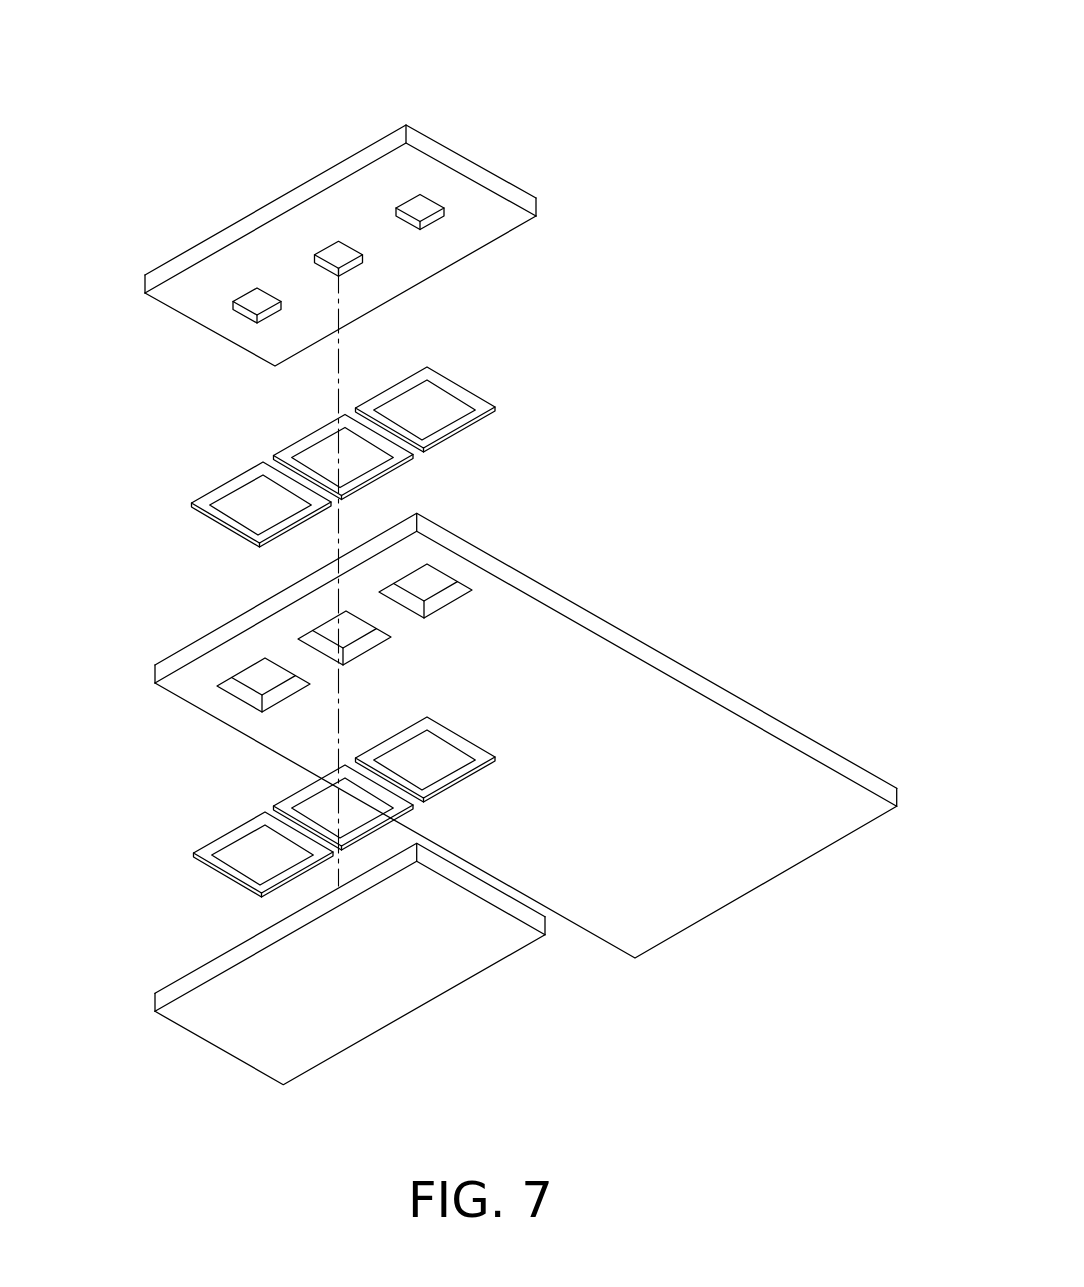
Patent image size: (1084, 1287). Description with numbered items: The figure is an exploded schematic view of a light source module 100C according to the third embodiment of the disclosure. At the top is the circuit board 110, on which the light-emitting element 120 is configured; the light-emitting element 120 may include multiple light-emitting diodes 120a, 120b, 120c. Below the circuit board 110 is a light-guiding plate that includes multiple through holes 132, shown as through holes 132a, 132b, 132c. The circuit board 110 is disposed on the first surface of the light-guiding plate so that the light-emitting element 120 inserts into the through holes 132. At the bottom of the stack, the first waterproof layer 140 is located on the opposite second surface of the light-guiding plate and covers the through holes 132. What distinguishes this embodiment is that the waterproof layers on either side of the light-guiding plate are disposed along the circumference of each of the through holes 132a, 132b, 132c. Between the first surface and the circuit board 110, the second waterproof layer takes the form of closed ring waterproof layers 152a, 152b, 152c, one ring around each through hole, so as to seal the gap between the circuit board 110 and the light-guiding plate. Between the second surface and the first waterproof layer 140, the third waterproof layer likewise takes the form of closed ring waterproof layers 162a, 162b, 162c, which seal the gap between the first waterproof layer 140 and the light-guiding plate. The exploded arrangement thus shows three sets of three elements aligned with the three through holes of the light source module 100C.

The circuit board 110 is at (469, 191).
The light-emitting element 120 is at (527, 169).
The light-emitting diode 120a is at (255, 310).
The light-emitting diode 120b is at (330, 262).
The light-emitting diode 120c is at (415, 215).
The through holes 132 is at (470, 460).
The through hole 132a is at (250, 682).
The through hole 132b is at (347, 637).
The through hole 132c is at (428, 597).
The first waterproof layer 140 is at (168, 990).
The closed ring waterproof layer 152a is at (194, 505).
The closed ring waterproof layer 152b is at (411, 456).
The closed ring waterproof layer 152c is at (496, 408).
The closed ring waterproof layer 162a is at (193, 855).
The closed ring waterproof layer 162b is at (297, 798).
The closed ring waterproof layer 162c is at (383, 752).
The light source module 100C is at (499, 569).